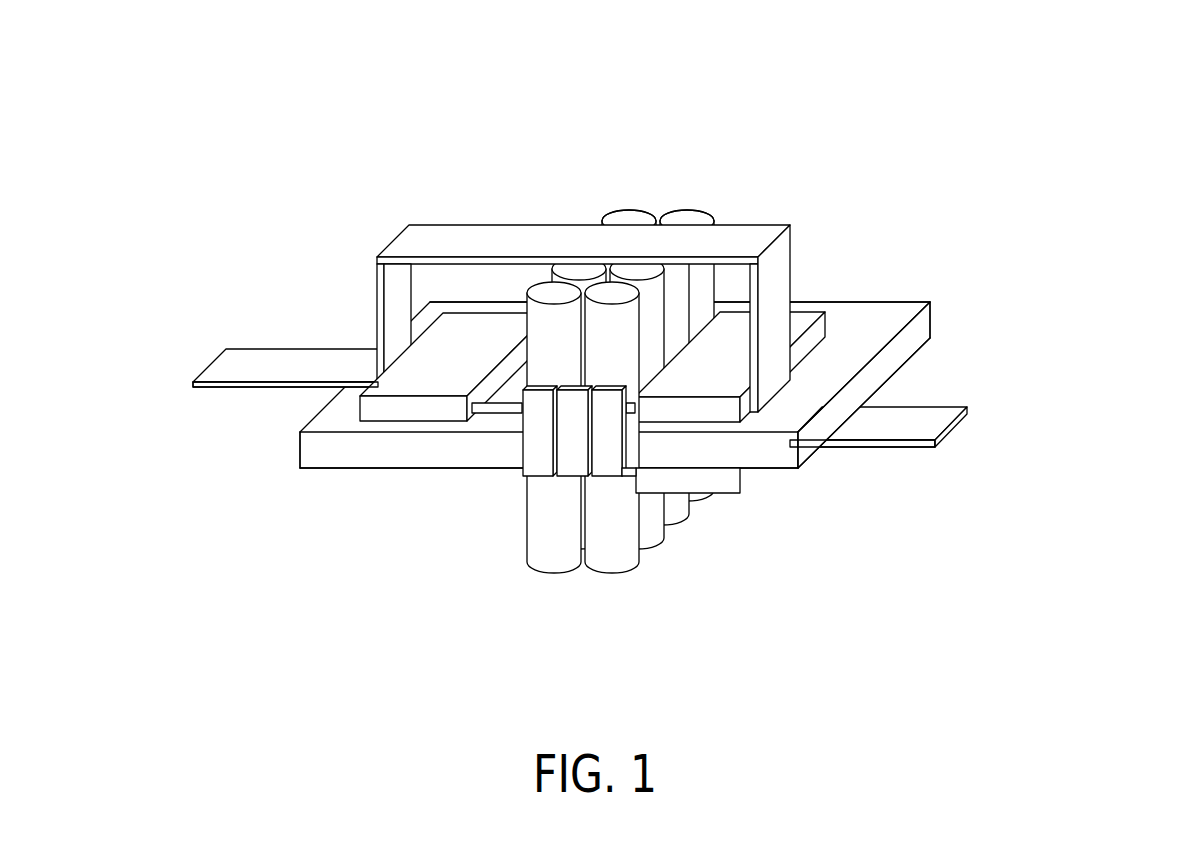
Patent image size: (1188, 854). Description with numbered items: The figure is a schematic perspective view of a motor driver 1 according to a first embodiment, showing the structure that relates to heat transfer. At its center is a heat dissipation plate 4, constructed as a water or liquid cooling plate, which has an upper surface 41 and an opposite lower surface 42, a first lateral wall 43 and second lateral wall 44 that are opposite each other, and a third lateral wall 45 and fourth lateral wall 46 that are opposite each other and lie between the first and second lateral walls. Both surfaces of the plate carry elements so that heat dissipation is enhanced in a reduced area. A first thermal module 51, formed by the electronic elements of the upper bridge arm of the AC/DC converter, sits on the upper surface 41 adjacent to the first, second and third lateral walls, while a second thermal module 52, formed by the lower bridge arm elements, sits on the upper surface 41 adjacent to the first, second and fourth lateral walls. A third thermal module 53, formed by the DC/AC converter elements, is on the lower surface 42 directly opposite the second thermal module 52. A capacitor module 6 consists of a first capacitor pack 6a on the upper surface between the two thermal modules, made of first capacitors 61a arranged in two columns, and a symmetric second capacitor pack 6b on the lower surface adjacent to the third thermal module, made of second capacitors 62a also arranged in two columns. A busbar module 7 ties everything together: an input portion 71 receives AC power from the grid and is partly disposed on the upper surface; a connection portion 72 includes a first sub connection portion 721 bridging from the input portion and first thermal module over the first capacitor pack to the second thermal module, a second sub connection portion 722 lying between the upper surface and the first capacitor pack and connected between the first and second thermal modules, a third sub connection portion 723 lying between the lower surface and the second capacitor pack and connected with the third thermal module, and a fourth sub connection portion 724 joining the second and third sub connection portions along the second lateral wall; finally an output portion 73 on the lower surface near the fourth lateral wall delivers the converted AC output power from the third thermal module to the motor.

The motor driver 1 is at (1136, 137).
The heat dissipation plate 4 is at (631, 401).
The upper surface 41 is at (903, 298).
The lower surface 42 is at (925, 353).
The first lateral wall 43 is at (936, 310).
The second lateral wall 44 is at (783, 467).
The third lateral wall 45 is at (297, 452).
The fourth lateral wall 46 is at (807, 444).
The first thermal module 51 is at (428, 410).
The second thermal module 52 is at (713, 406).
The third thermal module 53 is at (741, 486).
The capacitor module 6 is at (688, 394).
The first capacitor pack 6a is at (646, 234).
The second capacitor pack 6b is at (620, 496).
The first capacitors 61a is at (731, 130).
The second capacitors 62a is at (664, 657).
The busbar module 7 is at (272, 218).
The input portion 71 is at (242, 367).
The connection portion 72 is at (558, 256).
The first sub connection portion 721 is at (452, 243).
The second sub connection portion 722 is at (550, 498).
The third sub connection portion 723 is at (627, 478).
The fourth sub connection portion 724 is at (537, 465).
The output portion 73 is at (934, 423).